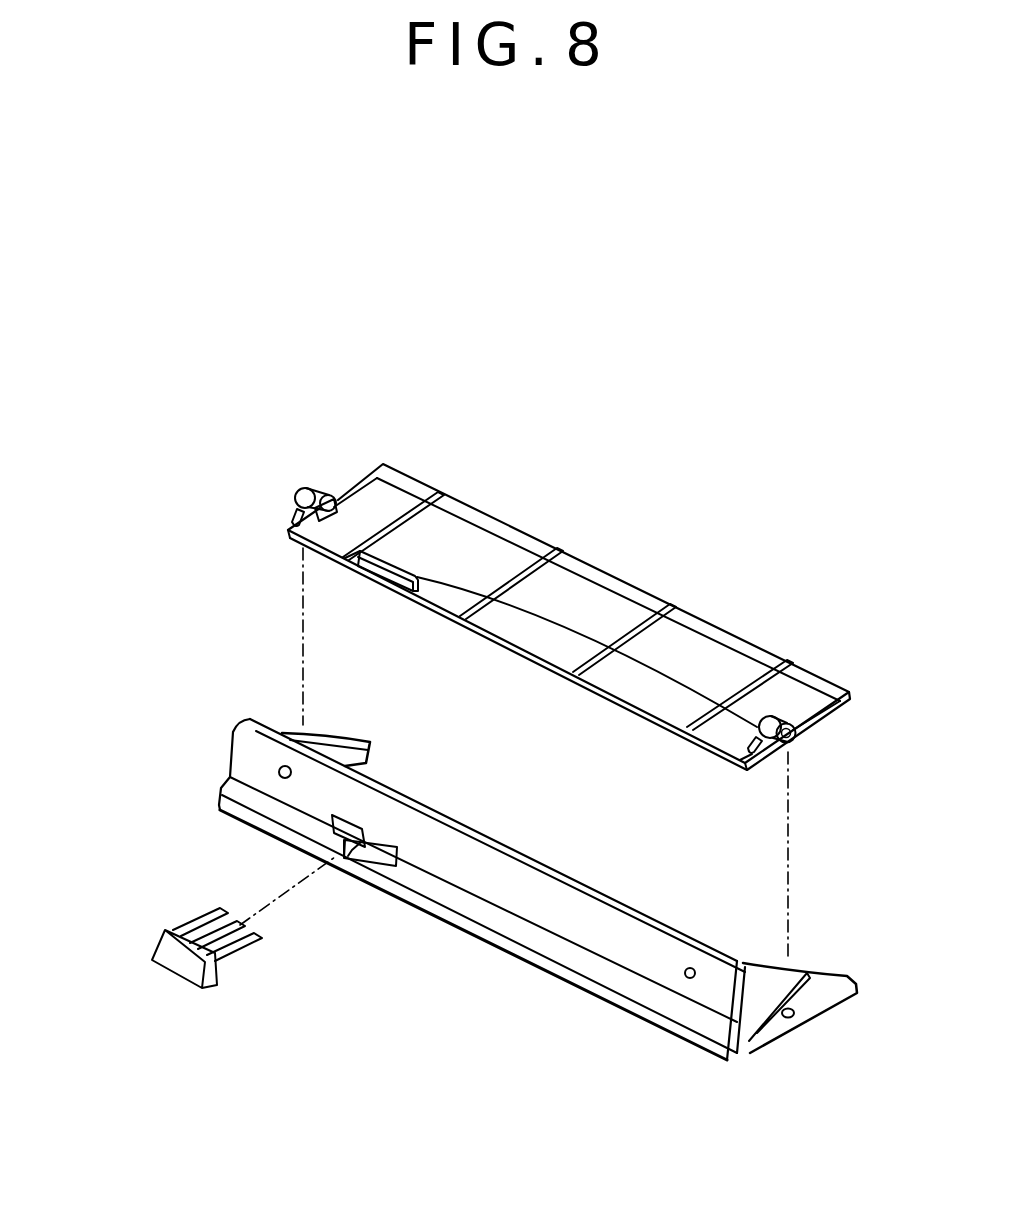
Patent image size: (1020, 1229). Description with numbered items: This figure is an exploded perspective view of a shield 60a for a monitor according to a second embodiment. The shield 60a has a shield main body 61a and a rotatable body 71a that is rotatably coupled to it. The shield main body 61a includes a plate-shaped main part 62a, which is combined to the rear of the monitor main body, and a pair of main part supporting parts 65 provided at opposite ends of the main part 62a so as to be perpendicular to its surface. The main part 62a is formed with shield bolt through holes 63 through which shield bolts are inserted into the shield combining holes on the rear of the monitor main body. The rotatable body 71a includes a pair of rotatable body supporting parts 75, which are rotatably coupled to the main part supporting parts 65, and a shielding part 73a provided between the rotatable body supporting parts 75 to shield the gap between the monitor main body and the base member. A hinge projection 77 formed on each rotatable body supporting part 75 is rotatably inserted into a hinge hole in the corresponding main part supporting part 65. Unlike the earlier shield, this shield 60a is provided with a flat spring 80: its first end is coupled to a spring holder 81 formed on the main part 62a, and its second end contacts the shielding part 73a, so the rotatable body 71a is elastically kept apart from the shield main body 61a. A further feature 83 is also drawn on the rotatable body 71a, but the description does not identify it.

The shield 60a is at (108, 557).
The shield main body 61a is at (216, 723).
The main part 62a is at (540, 915).
The shield bolt through holes 63 is at (287, 782).
The main part supporting parts 65 is at (350, 733).
The rotatable body 71a is at (277, 537).
The shielding part 73a is at (622, 583).
The rotatable body supporting parts 75 is at (362, 472).
The hinge projection 77 is at (298, 490).
The flat spring 80 is at (194, 990).
The spring holder 81 is at (368, 868).
The tab 83 is at (405, 552).